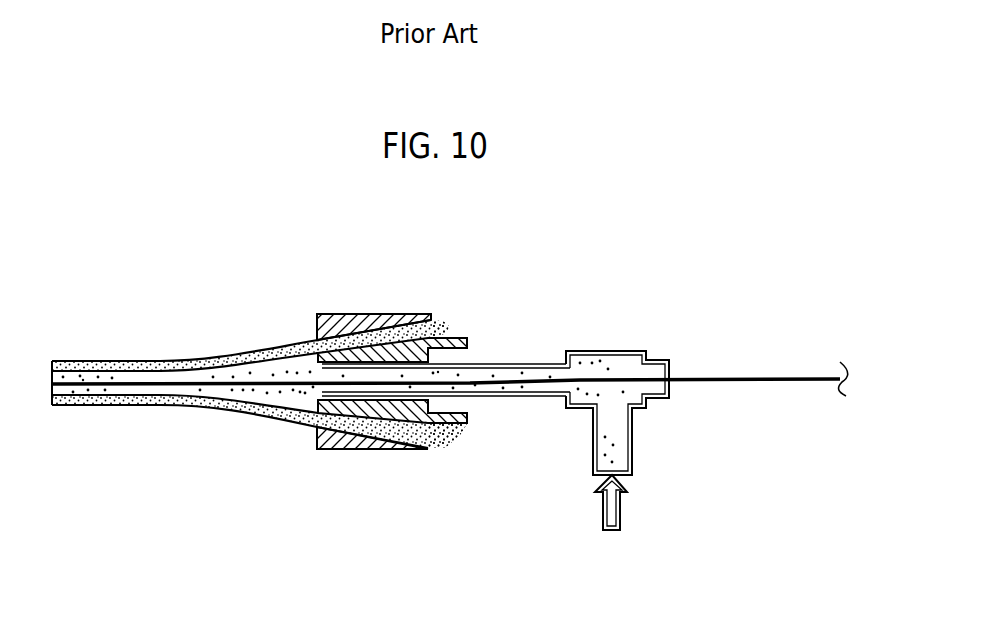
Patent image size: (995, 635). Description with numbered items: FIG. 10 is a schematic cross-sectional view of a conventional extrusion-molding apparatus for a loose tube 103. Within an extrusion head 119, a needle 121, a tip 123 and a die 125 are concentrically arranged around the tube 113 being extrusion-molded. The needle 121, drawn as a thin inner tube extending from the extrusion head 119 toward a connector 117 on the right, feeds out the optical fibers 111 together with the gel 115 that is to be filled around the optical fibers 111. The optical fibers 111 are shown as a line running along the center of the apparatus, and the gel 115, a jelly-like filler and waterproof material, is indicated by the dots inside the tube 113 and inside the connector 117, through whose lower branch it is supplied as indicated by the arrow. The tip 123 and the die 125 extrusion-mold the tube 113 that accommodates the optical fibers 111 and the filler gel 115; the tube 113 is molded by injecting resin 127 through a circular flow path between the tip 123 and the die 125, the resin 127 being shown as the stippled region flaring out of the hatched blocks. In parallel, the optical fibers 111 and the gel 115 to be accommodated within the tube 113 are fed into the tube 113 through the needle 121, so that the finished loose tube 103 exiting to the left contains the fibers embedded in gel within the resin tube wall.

The loose tube 103 is at (103, 362).
The tube 113 is at (163, 361).
The gel 115 is at (273, 395).
The extrusion head 119 is at (395, 312).
The die 125 is at (360, 314).
The resin 127 is at (435, 327).
The tip 123 is at (448, 338).
The needle 121 is at (545, 362).
The Y-connector 117 is at (557, 283).
The optical fibers 111 is at (753, 377).